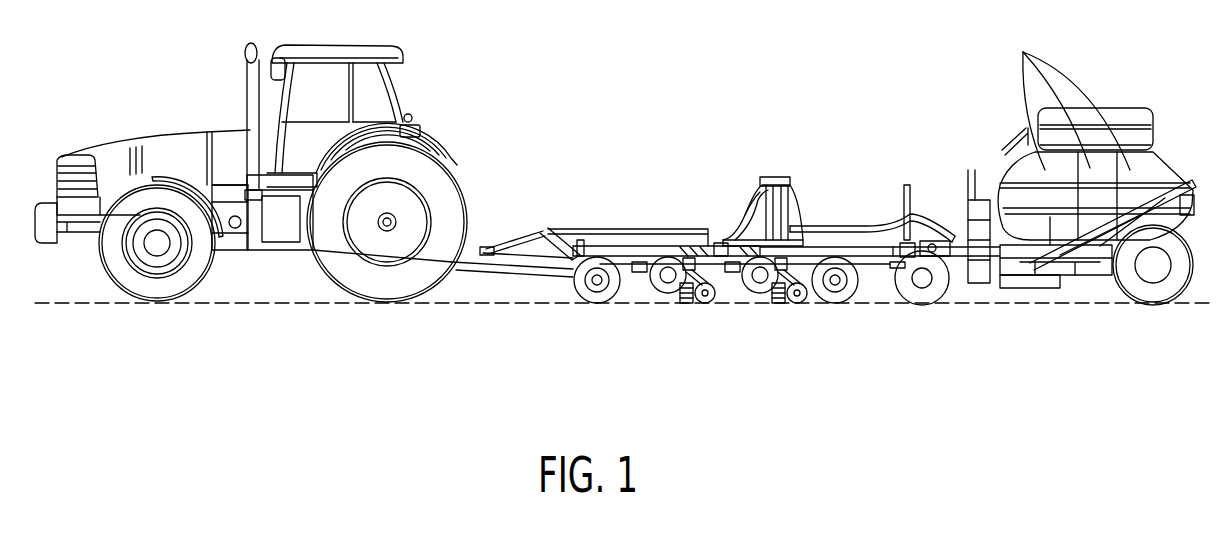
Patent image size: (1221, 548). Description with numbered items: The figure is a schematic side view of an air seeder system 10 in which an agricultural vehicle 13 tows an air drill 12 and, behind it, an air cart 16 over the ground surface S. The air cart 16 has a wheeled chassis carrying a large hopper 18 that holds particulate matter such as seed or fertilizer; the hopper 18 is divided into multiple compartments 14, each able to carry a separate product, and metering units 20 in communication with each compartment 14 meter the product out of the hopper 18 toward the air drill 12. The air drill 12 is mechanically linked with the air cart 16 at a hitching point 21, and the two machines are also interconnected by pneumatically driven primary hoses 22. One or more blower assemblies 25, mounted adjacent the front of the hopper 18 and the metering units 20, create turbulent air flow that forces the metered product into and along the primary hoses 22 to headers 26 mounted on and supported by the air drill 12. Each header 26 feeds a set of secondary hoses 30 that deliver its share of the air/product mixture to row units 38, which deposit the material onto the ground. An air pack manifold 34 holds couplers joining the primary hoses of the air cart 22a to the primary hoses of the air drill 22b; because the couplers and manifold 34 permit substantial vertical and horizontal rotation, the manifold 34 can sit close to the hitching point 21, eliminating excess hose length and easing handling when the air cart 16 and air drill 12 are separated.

The air seeder system 10 is at (896, 88).
The air drill 12 is at (667, 186).
The agricultural vehicle 13 is at (203, 64).
The compartments 14 is at (1071, 98).
The air cart 16 is at (1124, 98).
The hopper 18 is at (1180, 163).
The metering units 20 is at (1108, 252).
The hitching point 21 is at (888, 270).
The primary hoses 22 is at (1003, 275).
The primary hoses of the air cart 22a is at (930, 237).
The primary hoses of the air drill 22b is at (885, 222).
The blower assemblies 25 is at (965, 215).
The headers 26 is at (777, 195).
The secondary hoses 30 is at (750, 210).
The air pack manifold 34 is at (905, 182).
The row units 38 is at (786, 316).
The soil surface S is at (266, 308).